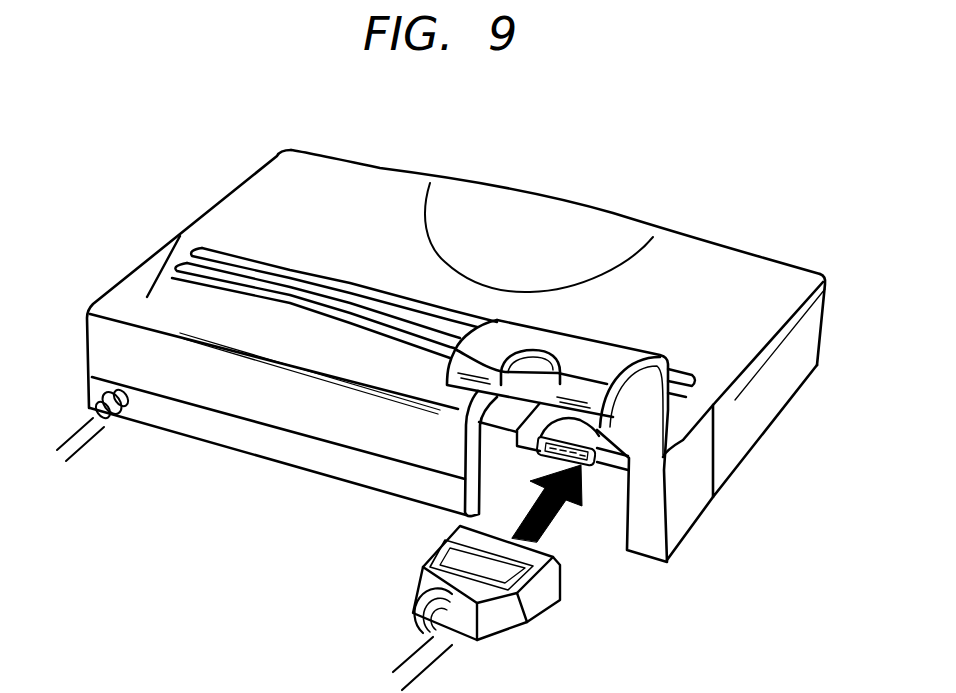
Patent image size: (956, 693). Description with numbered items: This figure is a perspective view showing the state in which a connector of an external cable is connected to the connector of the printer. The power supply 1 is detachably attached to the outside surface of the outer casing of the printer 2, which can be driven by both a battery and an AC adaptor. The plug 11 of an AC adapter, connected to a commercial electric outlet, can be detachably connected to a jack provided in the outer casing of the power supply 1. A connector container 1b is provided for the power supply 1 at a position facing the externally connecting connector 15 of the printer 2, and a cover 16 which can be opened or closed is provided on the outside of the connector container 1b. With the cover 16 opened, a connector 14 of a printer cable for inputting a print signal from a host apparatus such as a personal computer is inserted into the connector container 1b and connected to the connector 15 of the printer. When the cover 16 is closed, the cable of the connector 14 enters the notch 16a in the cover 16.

The power supply 1 is at (257, 407).
The connector container 1b is at (483, 483).
The printer 2 is at (730, 268).
The plug 11 is at (112, 420).
The connector 14 is at (510, 622).
The externally connecting connector 15 is at (591, 462).
The cover 16 is at (575, 357).
The notch 16a is at (533, 357).